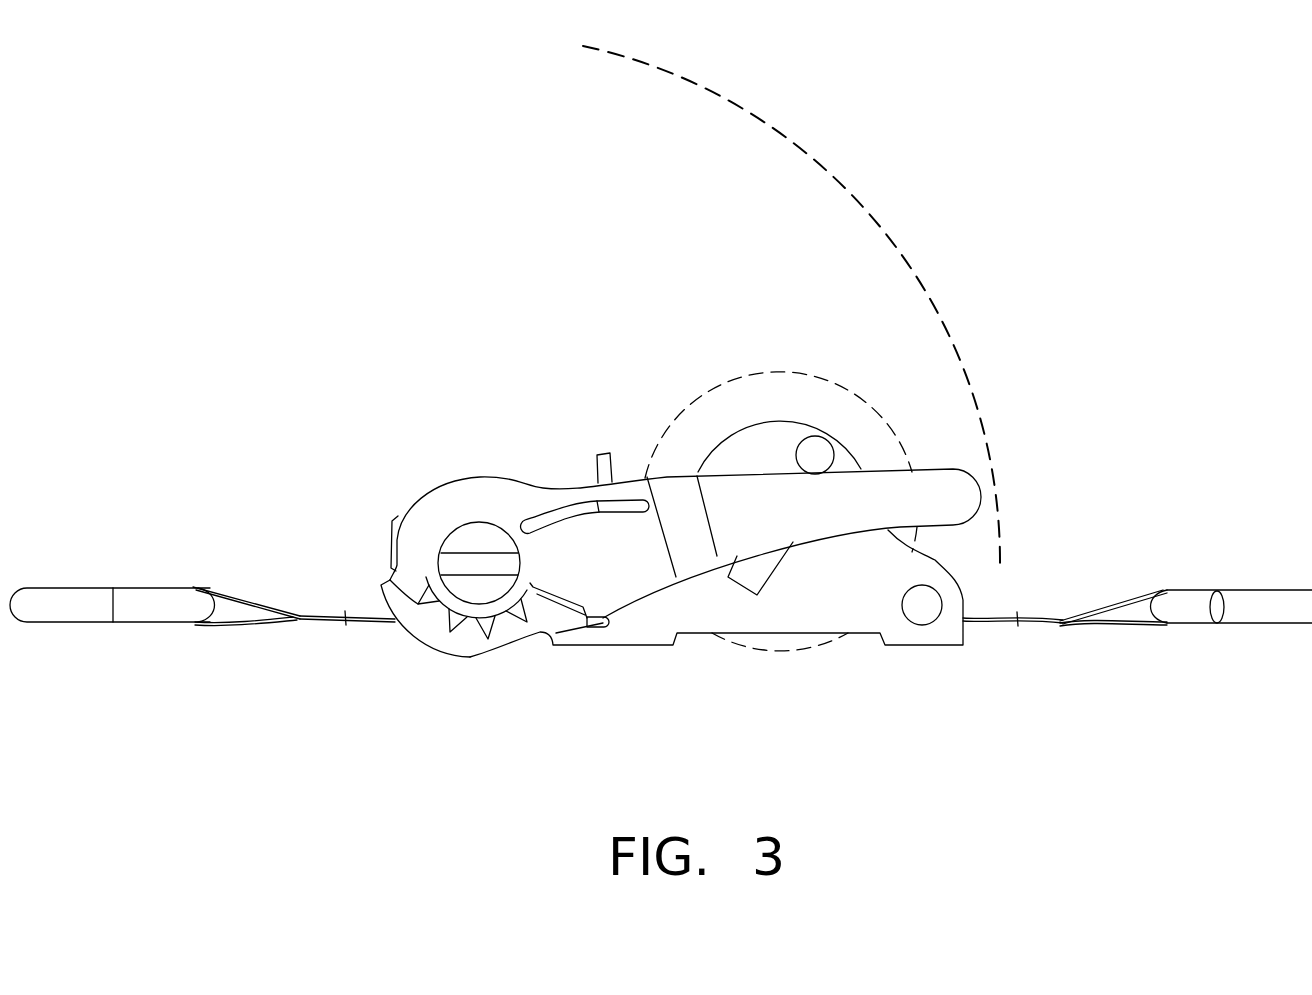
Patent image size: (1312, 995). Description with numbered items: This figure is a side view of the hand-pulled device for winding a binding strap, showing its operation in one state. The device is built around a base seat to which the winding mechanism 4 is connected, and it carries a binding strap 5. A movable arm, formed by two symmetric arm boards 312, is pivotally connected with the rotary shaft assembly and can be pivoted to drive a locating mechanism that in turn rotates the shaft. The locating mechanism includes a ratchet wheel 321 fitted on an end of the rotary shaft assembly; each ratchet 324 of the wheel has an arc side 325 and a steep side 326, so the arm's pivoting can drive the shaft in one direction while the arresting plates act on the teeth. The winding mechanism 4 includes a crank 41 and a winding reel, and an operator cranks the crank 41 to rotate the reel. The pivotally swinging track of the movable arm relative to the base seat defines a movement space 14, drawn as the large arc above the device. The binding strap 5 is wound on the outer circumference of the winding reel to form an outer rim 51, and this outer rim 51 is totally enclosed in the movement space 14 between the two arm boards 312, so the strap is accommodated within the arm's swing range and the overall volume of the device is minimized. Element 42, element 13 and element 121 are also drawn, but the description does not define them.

The movement space 14 is at (672, 210).
The outer rim 51 is at (760, 373).
The pivot pin 42 is at (817, 457).
The arm board 312 is at (878, 500).
The crank 41 is at (770, 550).
The winding mechanism 4 is at (687, 647).
The spring bar 13 is at (602, 625).
The ratchet wheel 321 is at (407, 632).
The ratchet 324 is at (505, 696).
The arc side 325 is at (487, 627).
The steep side 326 is at (503, 623).
The binding strap 5 is at (290, 618).
The handle rod 121 is at (72, 610).